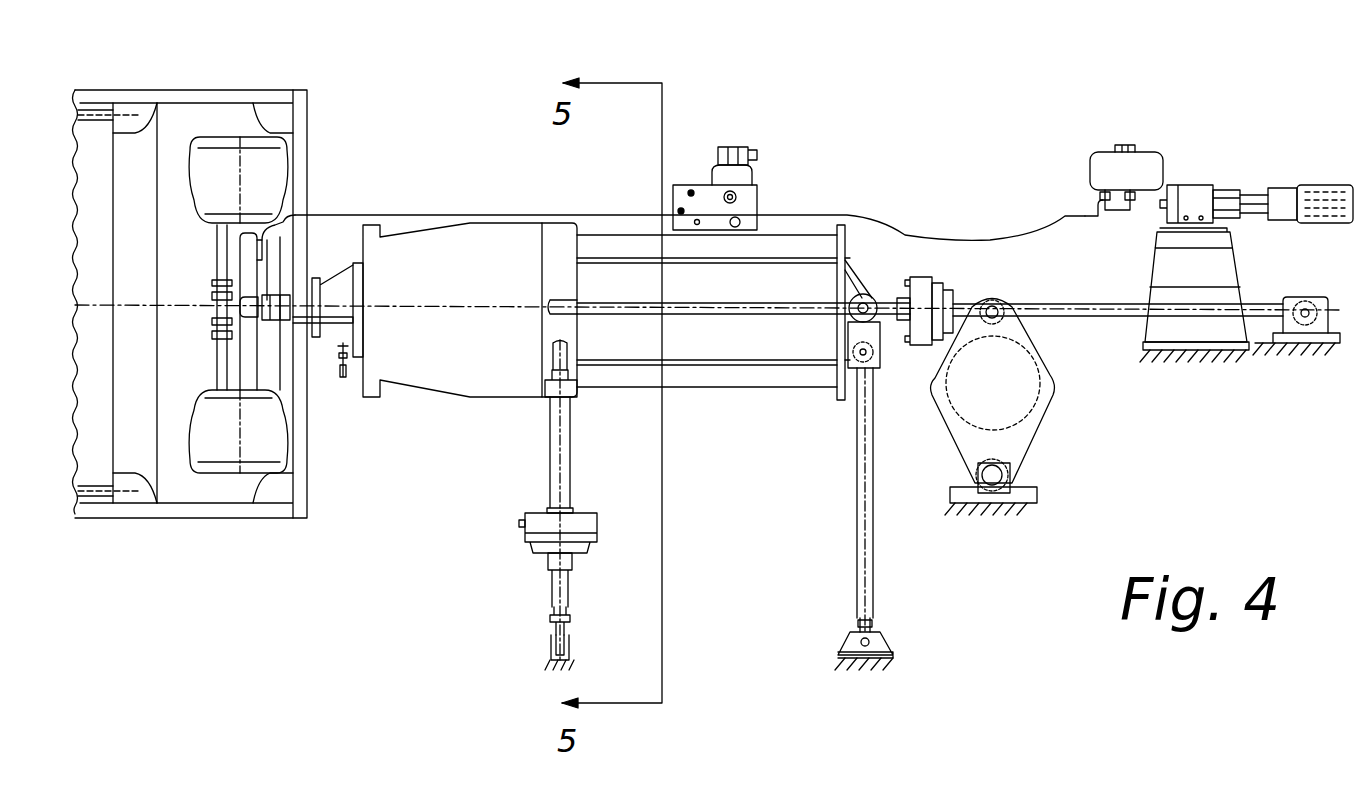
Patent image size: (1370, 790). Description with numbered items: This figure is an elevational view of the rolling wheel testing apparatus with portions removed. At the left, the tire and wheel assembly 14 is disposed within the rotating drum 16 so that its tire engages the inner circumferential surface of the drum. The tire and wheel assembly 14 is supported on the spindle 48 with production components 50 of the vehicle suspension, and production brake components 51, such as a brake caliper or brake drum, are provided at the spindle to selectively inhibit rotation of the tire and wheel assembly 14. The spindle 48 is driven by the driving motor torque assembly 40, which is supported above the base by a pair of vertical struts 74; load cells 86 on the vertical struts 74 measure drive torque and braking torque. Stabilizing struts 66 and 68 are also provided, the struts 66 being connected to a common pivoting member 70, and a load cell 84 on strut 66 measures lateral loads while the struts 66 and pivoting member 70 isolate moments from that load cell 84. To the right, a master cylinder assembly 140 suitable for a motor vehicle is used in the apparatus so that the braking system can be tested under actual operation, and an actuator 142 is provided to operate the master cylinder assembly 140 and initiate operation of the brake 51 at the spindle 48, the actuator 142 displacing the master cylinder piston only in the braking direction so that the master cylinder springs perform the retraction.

The rotating drum 16 is at (228, 90).
The tire and wheel assembly 14 is at (285, 148).
The production brake components 51 is at (293, 242).
The production components 50 is at (262, 320).
The spindle 48 is at (443, 222).
The driving motor torque assembly 40 is at (705, 392).
The stabilizing strut 68 is at (758, 305).
The load cell 84 is at (940, 277).
The pivoting member 70 is at (1045, 413).
The stabilizing struts 66 is at (876, 520).
The vertical struts 74 is at (548, 455).
The load cells 86 is at (525, 545).
The master cylinder assembly 140 is at (1157, 151).
The actuator 142 is at (1266, 190).